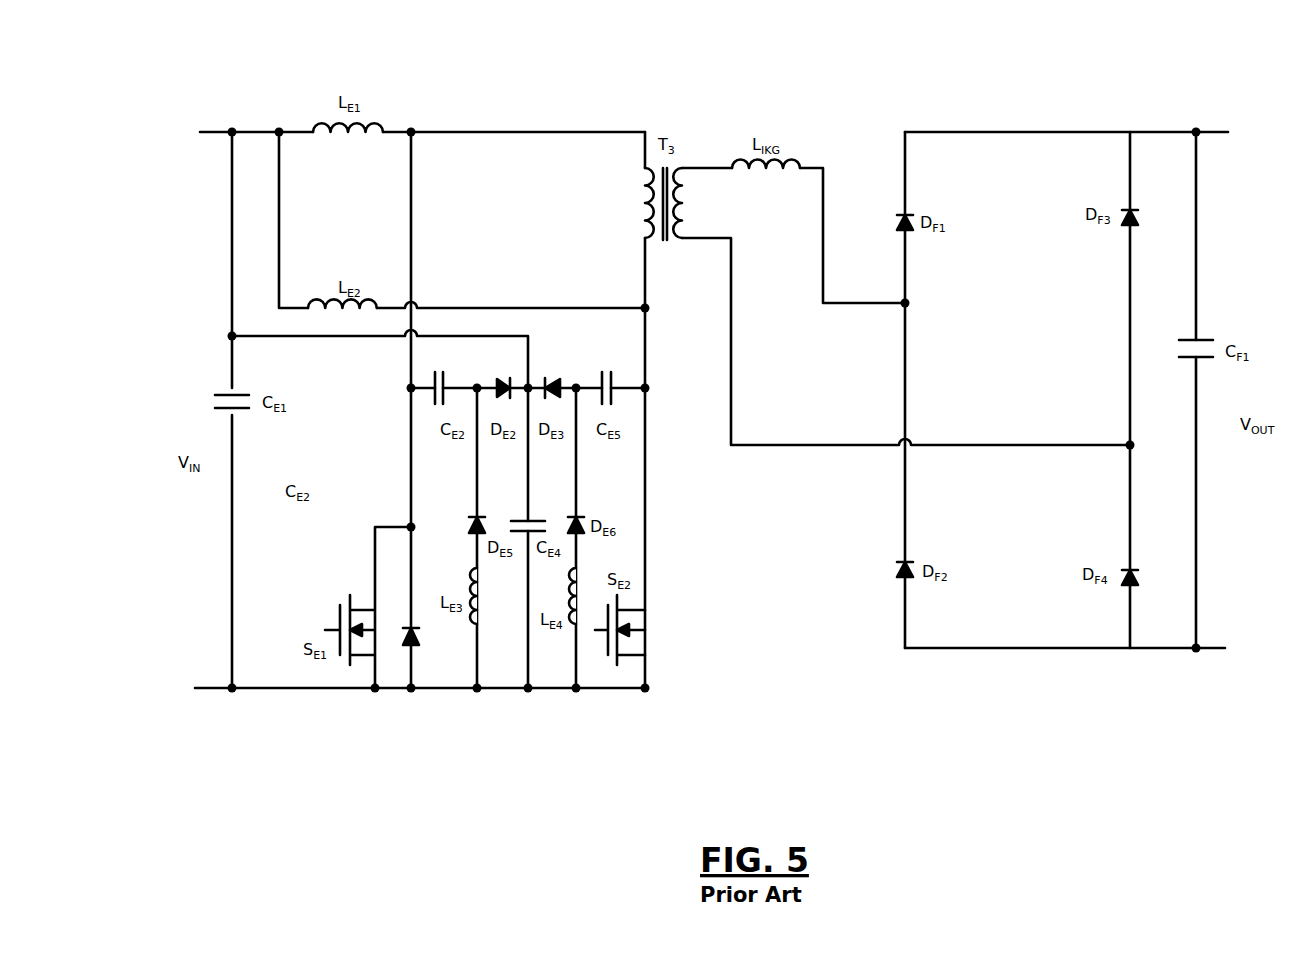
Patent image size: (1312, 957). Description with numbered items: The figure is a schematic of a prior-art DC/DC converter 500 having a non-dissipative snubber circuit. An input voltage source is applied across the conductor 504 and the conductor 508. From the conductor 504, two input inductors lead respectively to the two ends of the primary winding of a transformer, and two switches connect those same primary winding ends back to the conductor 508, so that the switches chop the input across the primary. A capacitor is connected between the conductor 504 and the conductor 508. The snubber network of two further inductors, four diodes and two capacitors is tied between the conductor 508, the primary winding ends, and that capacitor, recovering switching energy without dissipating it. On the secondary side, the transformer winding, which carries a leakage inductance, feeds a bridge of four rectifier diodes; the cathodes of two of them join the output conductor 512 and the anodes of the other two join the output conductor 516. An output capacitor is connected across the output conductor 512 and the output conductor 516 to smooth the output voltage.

The DC/DC converter 500 is at (1122, 46).
The conductor 504 is at (266, 132).
The conductor 508 is at (250, 690).
The output conductor 512 is at (1062, 132).
The output conductor 516 is at (1043, 650).